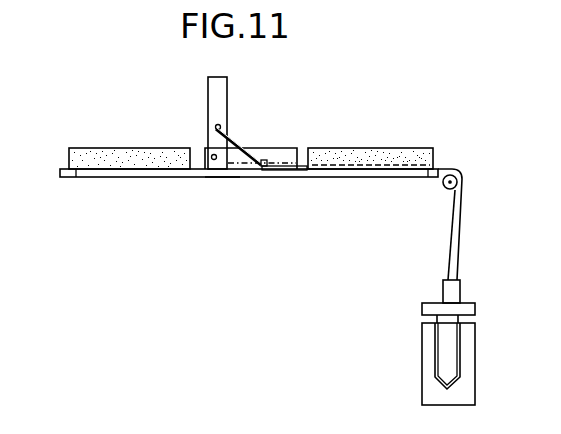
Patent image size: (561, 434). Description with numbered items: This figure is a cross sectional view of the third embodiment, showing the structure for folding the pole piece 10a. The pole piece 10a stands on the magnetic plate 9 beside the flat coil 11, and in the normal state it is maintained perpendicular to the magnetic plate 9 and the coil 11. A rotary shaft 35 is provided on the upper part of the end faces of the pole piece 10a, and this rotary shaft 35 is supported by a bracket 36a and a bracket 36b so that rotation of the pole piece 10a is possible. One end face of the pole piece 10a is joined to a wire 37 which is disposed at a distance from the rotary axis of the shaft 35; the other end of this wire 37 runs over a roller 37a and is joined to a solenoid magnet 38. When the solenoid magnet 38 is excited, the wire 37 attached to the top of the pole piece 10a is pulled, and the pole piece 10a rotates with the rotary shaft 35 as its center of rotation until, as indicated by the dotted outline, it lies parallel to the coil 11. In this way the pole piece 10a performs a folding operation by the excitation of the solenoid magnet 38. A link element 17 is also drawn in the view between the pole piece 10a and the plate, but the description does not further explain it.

The magnetic plate 9 is at (88, 178).
The pole piece 10a is at (227, 93).
The flat coil 11 is at (142, 154).
The link lever 17 is at (234, 137).
The rotary shaft 35 is at (204, 167).
The bracket 36a is at (220, 178).
The bracket 36b is at (253, 201).
The roller 37a is at (443, 181).
The wire 37 is at (452, 245).
The solenoid magnet 38 is at (422, 370).